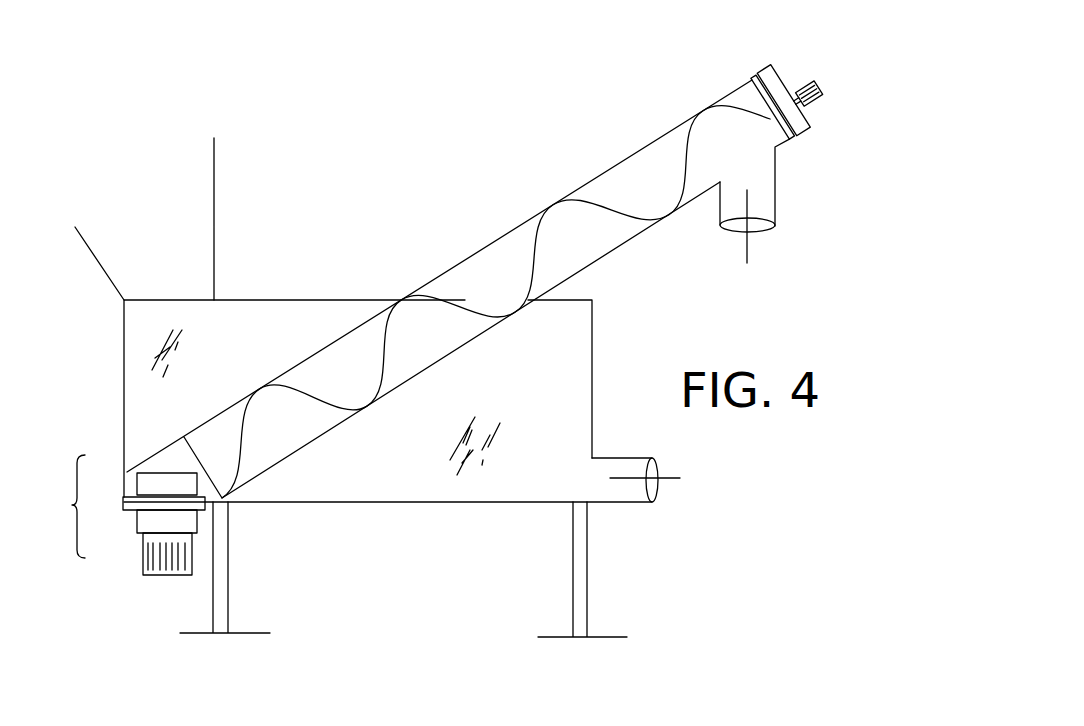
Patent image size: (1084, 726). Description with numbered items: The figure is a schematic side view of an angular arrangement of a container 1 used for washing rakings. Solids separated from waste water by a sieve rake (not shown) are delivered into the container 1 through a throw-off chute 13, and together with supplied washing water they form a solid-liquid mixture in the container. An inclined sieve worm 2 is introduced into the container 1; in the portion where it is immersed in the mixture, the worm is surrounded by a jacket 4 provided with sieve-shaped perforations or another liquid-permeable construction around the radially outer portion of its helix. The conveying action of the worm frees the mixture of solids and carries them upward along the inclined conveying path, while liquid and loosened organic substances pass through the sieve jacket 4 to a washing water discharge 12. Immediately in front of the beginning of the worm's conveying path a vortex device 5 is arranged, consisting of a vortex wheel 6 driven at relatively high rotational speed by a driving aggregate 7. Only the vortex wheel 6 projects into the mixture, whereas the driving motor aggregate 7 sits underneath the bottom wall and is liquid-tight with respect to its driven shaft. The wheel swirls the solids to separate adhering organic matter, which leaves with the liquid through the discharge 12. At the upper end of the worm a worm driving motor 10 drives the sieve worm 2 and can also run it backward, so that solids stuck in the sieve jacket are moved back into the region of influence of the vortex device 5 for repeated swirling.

The container 1 is at (565, 393).
The sieve worm 2 is at (612, 202).
The jacket 4 is at (283, 460).
The vortex device 5 is at (122, 506).
The vortex wheel 6 is at (148, 483).
The driving aggregate 7 is at (165, 563).
The worm driving motor 10 is at (805, 88).
The washing water discharge 12 is at (763, 202).
The throw-off chute 13 is at (140, 207).